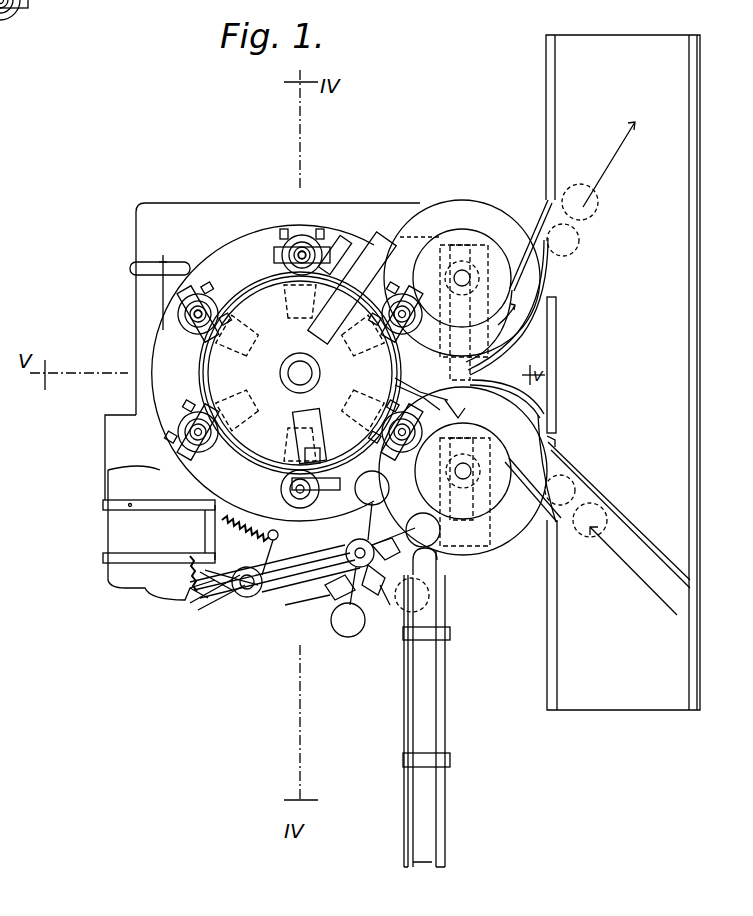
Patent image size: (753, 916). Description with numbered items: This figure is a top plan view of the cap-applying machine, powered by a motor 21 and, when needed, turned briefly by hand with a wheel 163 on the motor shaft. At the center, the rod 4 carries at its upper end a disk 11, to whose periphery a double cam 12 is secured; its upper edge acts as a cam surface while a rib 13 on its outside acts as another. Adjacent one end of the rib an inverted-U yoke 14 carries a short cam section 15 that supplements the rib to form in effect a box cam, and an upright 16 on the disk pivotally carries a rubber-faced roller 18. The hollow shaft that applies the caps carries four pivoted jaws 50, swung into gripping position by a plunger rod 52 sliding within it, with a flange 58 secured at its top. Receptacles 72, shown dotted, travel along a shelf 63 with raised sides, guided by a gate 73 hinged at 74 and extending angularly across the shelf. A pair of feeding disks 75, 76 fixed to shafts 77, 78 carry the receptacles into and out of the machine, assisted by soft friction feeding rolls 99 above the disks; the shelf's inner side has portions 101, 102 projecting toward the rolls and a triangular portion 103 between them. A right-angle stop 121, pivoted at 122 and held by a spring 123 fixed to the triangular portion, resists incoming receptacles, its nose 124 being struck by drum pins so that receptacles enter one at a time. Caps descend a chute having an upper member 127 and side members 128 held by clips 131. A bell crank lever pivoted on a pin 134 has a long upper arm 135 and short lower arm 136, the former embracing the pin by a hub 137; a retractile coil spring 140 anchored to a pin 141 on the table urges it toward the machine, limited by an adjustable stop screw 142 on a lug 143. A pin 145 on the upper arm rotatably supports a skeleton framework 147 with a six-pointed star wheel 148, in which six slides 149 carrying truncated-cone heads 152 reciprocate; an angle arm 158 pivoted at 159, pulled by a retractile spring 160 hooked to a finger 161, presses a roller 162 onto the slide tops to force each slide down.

The rod 4 is at (300, 373).
The disk 11 is at (300, 373).
The double cam 12 is at (226, 376).
The cam rib 13 is at (368, 395).
The yoke 14 is at (362, 245).
The short cam section 15 is at (338, 238).
The upright 16 is at (318, 440).
The roller 18 is at (312, 470).
The motor 21 is at (120, 485).
The jaw 50 is at (178, 305).
The plunger rod 52 is at (300, 253).
The flange 58 is at (198, 314).
The shelf 63 is at (623, 372).
The receptacle 72 is at (575, 225).
The gate 73 is at (648, 535).
The hinge 74 is at (553, 444).
The feeding disk 75 is at (540, 516).
The feeding disk 76 is at (440, 205).
The shaft 77 is at (463, 473).
The shaft 78 is at (462, 277).
The feeding roll 99 is at (505, 505).
The projecting portion 101 is at (533, 505).
The projecting portion 102 is at (520, 262).
The triangular portion 103 is at (556, 340).
The stop 121 is at (460, 412).
The pivot 122 is at (410, 376).
The spring 123 is at (470, 372).
The nose 124 is at (399, 392).
The upper member 127 is at (430, 805).
The side member 128 is at (410, 738).
The clip 131 is at (448, 635).
The pin 134 is at (245, 585).
The upper arm 135 is at (300, 583).
The lower arm 136 is at (290, 575).
The hub 137 is at (235, 585).
The retractile coil spring 140 is at (245, 478).
The pin 141 is at (159, 515).
The adjustable stop screw 142 is at (215, 540).
The lug 143 is at (193, 532).
The pin 145 is at (359, 572).
The skeleton framework 147 is at (372, 556).
The star wheel 148 is at (380, 605).
The slide 149 is at (375, 583).
The head 152 is at (385, 554).
The angle arm 158 is at (290, 590).
The pivot 159 is at (225, 590).
The retractile spring 160 is at (195, 595).
The finger 161 is at (205, 573).
The roller 162 is at (290, 535).
The wheel 163 is at (132, 272).